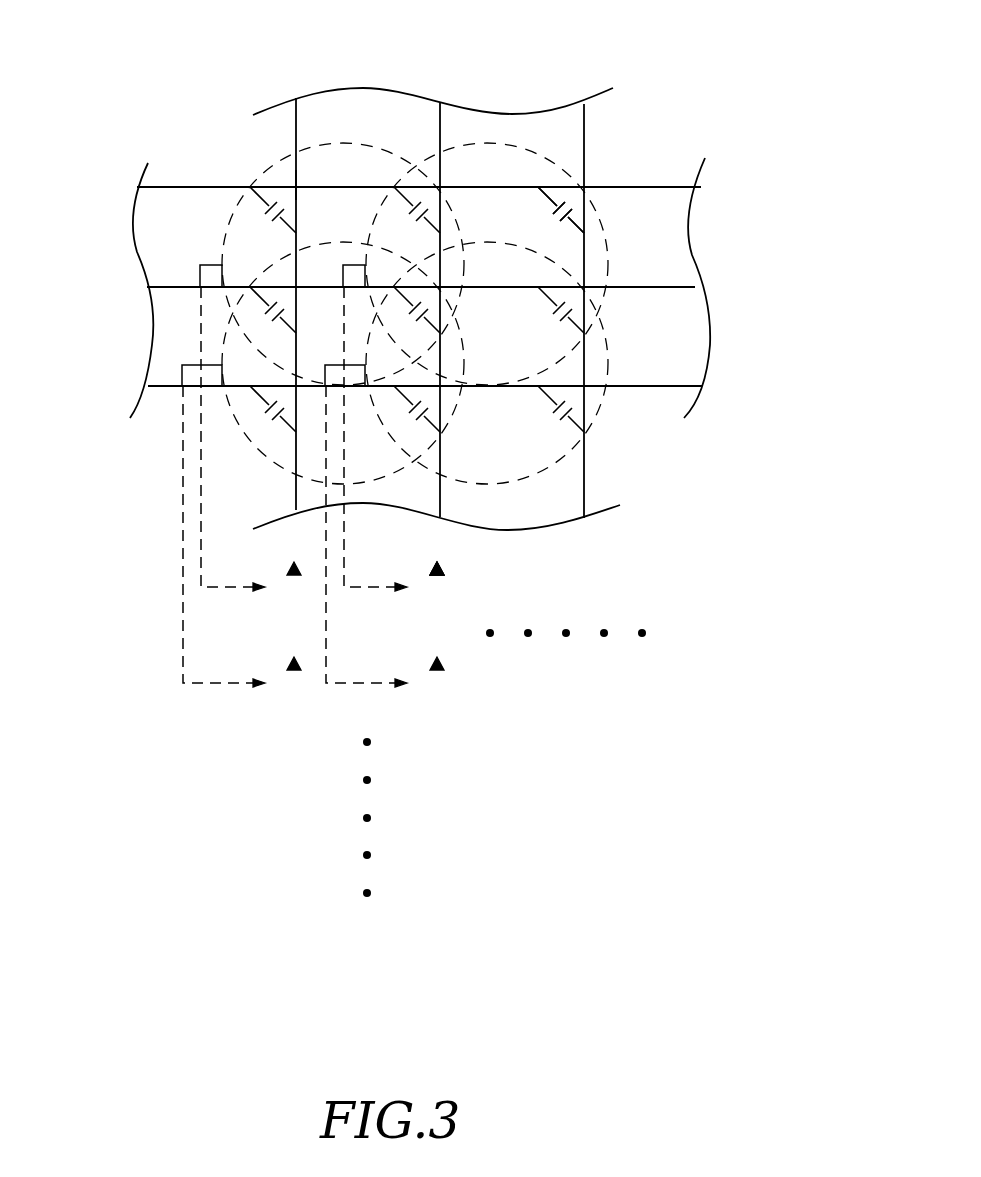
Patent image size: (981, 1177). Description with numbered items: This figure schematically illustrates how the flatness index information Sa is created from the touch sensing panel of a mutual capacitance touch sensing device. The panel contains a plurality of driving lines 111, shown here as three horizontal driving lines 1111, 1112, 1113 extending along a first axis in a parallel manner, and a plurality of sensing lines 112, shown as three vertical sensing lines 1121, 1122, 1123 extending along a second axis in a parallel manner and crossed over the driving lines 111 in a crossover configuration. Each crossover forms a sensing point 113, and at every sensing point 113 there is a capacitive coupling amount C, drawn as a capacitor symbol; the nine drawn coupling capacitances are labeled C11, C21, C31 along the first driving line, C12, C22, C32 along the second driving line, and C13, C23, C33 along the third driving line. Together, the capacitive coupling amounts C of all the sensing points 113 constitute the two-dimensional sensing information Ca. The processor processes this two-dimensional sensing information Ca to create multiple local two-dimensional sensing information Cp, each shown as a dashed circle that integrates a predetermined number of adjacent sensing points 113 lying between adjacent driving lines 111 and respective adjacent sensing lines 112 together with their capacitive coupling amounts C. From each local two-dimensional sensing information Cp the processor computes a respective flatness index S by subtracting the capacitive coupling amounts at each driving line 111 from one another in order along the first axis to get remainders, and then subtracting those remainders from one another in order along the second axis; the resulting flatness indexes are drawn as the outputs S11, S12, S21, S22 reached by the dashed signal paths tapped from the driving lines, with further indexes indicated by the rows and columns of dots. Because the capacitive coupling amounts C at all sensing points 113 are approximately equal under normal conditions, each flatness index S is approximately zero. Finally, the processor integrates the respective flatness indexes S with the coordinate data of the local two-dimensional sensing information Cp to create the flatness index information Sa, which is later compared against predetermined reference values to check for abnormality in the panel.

The driving lines 111 is at (105, 117).
The first electrode (row 1) 1111 is at (203, 187).
The first electrode (row 2) 1112 is at (178, 287).
The first electrode (row 3) 1113 is at (178, 386).
The sensing lines 112 is at (672, 102).
The second electrode (column 1) 1121 is at (297, 130).
The second electrode (column 2) 1122 is at (441, 130).
The second electrode (column 3) 1123 is at (585, 132).
The sensing points 113 is at (296, 187).
The capacitive coupling amount C is at (557, 243).
The 2D sensing information Ca is at (745, 296).
The local 2D sensing information Cp is at (606, 416).
The coupling capacitor C11 is at (267, 214).
The coupling capacitor C21 is at (411, 214).
The coupling capacitor C31 is at (554, 214).
The coupling capacitor C12 is at (267, 314).
The coupling capacitor C22 is at (411, 314).
The coupling capacitor C32 is at (554, 314).
The coupling capacitor C13 is at (267, 413).
The coupling capacitor C23 is at (411, 413).
The coupling capacitor C33 is at (554, 413).
The flatness index S is at (460, 592).
The flatness index information Sa is at (545, 577).
The sensing signal S11 is at (258, 438).
The sensing signal S12 is at (249, 535).
The sensing signal S21 is at (401, 438).
The sensing signal S22 is at (392, 535).